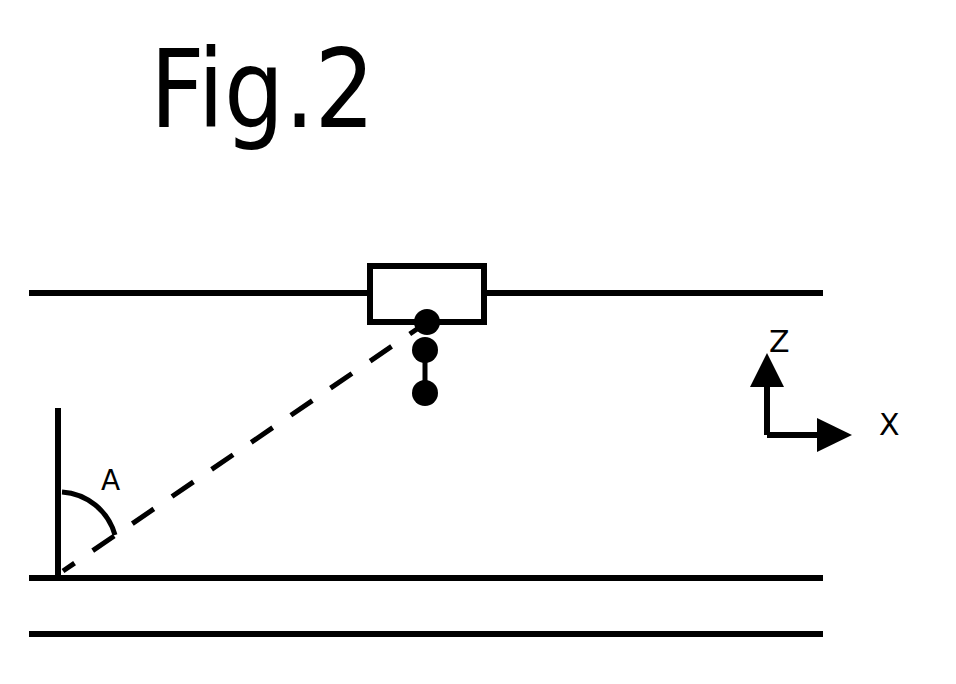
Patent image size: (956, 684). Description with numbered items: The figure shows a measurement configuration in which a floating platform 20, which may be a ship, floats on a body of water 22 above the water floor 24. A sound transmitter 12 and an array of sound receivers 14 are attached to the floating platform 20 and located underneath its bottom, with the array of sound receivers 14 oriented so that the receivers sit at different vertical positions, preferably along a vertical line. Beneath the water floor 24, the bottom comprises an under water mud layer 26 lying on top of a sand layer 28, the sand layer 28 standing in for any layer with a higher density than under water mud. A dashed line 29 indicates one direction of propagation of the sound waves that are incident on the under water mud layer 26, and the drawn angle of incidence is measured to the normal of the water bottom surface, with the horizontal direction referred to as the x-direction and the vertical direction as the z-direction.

The sound transmitter 12 is at (424, 316).
The array of sound receivers 14 is at (438, 350).
The floating platform 20 is at (366, 281).
The body of water 22 is at (650, 290).
The water floor 24 is at (682, 575).
The under water mud layer 26 is at (797, 605).
The sand layer 28 is at (253, 631).
The dashed line 29 is at (262, 431).